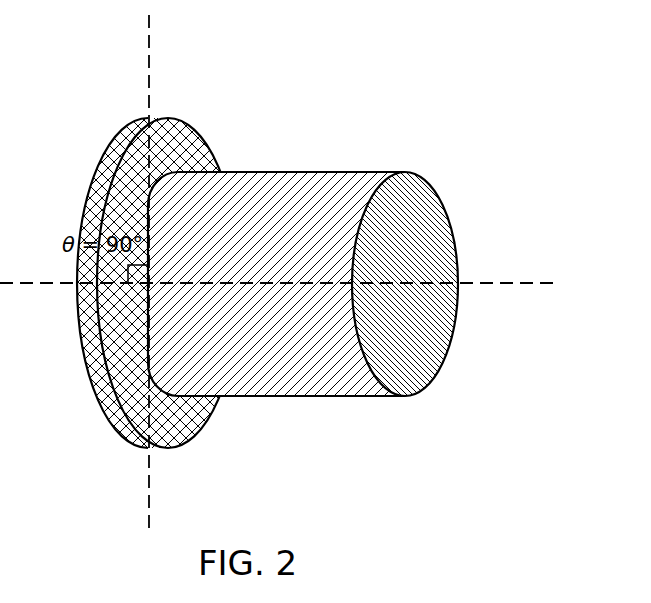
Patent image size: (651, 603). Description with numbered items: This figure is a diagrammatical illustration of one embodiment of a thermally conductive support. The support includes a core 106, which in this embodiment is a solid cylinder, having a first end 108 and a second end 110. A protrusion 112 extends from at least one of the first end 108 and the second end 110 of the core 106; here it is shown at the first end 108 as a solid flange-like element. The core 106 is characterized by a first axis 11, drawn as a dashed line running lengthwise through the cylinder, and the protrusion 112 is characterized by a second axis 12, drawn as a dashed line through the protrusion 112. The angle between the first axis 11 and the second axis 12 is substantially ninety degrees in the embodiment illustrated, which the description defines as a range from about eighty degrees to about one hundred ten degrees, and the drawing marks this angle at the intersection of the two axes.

The first axis 11 is at (521, 283).
The second axis 12 is at (150, 33).
The core 106 is at (319, 172).
The first end 108 is at (202, 146).
The second end 110 is at (407, 172).
The protrusion 112 is at (117, 137).